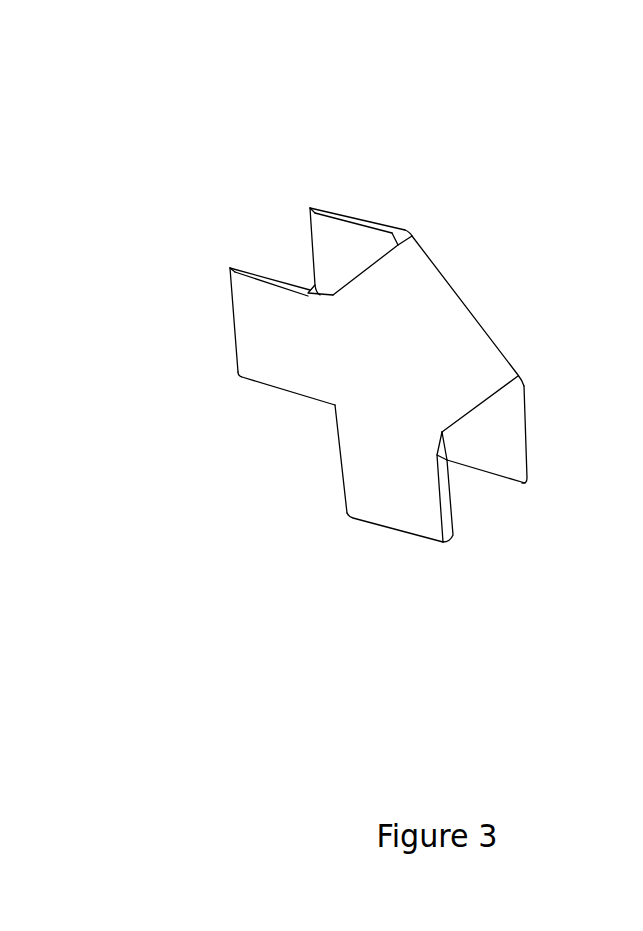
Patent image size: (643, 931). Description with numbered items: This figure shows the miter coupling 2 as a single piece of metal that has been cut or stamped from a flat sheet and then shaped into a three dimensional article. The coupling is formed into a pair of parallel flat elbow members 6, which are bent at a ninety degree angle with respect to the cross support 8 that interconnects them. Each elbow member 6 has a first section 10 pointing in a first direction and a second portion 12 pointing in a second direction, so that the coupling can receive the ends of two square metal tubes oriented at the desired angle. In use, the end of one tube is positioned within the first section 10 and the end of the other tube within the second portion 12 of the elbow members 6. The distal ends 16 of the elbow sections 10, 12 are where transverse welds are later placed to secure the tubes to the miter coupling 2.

The miter coupling 2 is at (452, 170).
The elbow members 6 is at (352, 397).
The cross support 8 is at (425, 367).
The first section 10 is at (395, 485).
The second portion 12 is at (352, 253).
The distal ends 16 is at (230, 303).